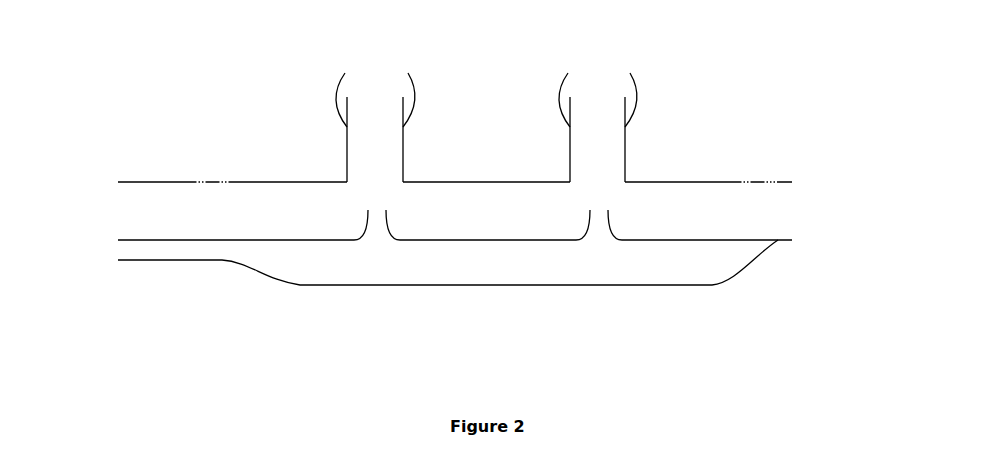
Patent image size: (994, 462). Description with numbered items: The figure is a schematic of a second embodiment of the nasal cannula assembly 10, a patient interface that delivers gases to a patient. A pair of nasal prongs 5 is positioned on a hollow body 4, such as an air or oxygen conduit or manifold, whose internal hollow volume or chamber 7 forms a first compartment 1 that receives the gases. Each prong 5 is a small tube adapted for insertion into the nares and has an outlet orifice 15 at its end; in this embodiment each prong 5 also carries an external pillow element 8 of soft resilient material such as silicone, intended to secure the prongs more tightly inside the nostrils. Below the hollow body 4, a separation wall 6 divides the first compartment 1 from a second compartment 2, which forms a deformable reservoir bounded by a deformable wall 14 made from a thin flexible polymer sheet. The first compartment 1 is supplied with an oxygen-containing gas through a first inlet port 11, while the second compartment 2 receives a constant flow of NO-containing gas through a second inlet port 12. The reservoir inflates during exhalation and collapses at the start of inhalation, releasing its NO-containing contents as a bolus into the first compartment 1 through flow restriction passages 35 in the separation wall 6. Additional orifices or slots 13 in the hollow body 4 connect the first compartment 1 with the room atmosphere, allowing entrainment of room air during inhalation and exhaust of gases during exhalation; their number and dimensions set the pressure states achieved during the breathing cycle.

The first compartment 1 is at (451, 217).
The second compartment 2 is at (467, 267).
The hollow body 4 is at (290, 165).
The nasal prongs 5 is at (410, 155).
The separation wall 6 is at (737, 243).
The internal hollow volume or chamber 7 is at (517, 208).
The pillow element 8 is at (418, 98).
The nasal cannula assembly 10 is at (268, 303).
The first inlet port 11 is at (115, 204).
The second inlet port 12 is at (148, 263).
The orifices or slots 13 is at (222, 170).
The deformable wall 14 is at (460, 287).
The outlet orifice 15 is at (375, 105).
The flared portion 35 is at (382, 231).